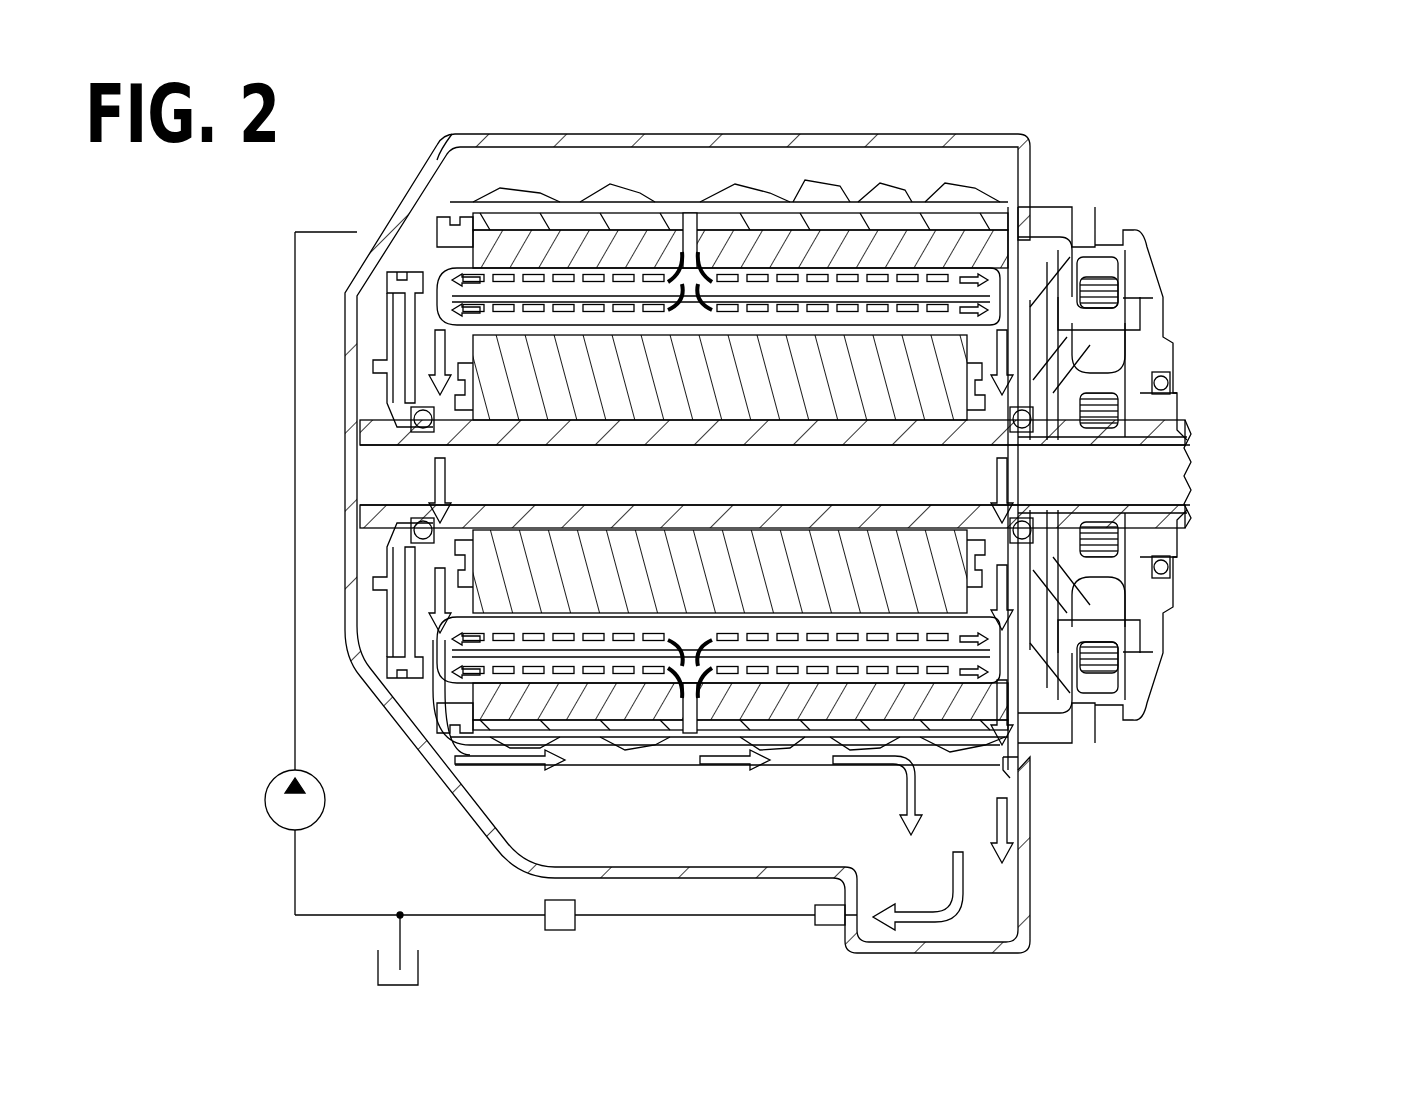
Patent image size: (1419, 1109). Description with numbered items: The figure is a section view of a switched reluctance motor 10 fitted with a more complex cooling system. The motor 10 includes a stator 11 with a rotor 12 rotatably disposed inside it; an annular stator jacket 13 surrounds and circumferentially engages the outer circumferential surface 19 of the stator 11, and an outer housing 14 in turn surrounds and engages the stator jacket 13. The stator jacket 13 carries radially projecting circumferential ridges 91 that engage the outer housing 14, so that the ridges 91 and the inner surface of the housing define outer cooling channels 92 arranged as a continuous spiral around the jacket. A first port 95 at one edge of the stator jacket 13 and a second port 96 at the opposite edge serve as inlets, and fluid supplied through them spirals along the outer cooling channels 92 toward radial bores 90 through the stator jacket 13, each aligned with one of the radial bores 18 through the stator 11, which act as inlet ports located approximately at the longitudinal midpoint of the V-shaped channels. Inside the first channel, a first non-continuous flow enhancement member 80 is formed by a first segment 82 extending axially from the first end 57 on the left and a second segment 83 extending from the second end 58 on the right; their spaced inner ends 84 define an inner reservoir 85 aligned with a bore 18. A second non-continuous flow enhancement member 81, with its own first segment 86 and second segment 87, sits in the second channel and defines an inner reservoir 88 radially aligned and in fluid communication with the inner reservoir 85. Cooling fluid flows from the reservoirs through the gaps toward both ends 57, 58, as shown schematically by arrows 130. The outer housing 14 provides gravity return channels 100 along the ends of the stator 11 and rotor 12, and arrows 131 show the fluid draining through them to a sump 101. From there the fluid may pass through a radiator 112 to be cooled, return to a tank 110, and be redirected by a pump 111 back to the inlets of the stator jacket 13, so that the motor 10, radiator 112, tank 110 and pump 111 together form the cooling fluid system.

The switched reluctance motor 10 is at (1128, 160).
The stator 11 is at (618, 215).
The rotor 12 is at (728, 376).
The stator jacket 13 is at (847, 200).
The outer housing 14 is at (863, 208).
The bores 18 is at (692, 255).
The outer circumferential surface 19 is at (553, 727).
The first end 57 is at (462, 270).
The second end 58 is at (1013, 227).
The first non-continuous flow enhancement member 80 is at (632, 250).
The second non-continuous flow enhancement member 81 is at (614, 338).
The first segment 82 is at (543, 268).
The second segment 83 is at (963, 277).
The inner ends 84 is at (712, 265).
The inner reservoir 85 is at (690, 300).
The first segment 86 is at (520, 405).
The second segment 87 is at (813, 330).
The inner reservoir 88 is at (690, 335).
The bores 90 is at (703, 290).
The circumferential ridges 91 is at (577, 215).
The outer cooling channels 92 is at (517, 215).
The first port 95 is at (450, 142).
The second port 96 is at (1020, 223).
The gravity return channels 100 is at (423, 345).
The sump 101 is at (990, 885).
The tank 110 is at (418, 965).
The pump 111 is at (265, 800).
The radiator 112 is at (578, 920).
The arrows 130 is at (568, 335).
The arrows 131 is at (405, 560).